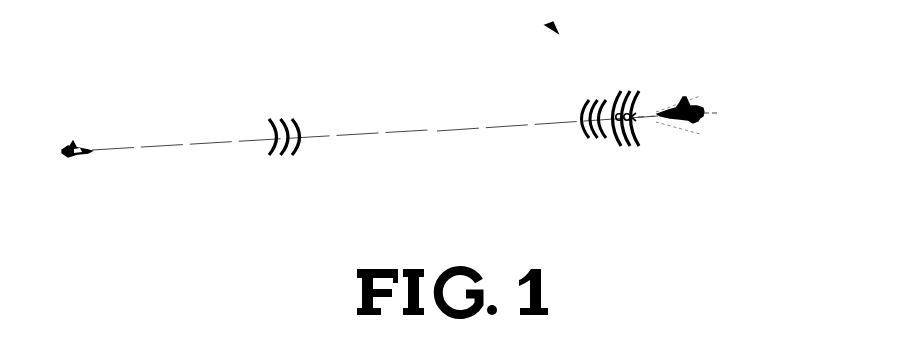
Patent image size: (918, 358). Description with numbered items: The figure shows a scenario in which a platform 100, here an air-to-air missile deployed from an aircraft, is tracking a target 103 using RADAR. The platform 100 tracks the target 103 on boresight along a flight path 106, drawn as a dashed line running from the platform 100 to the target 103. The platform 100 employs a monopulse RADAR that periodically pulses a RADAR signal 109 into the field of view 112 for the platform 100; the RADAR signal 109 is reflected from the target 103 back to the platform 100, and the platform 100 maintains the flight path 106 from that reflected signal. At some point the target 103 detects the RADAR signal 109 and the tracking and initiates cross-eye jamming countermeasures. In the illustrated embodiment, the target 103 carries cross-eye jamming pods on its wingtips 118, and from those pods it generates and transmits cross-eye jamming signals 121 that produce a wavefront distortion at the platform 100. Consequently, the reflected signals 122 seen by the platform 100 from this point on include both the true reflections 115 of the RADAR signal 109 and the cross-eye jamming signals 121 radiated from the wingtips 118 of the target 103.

The platform 100 is at (82, 148).
The target 103 is at (700, 112).
The flight path 106 is at (428, 130).
The RADAR signal 109 is at (268, 123).
The field of view 112 is at (581, 190).
The true reflections 115 is at (585, 103).
The wingtips 118 is at (653, 113).
The cross-eye jamming signals 121 is at (631, 90).
The reflected signals 122 is at (546, 26).